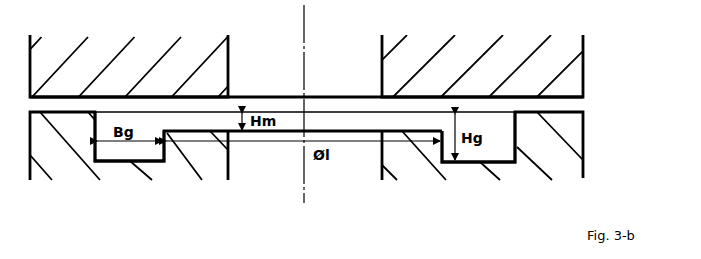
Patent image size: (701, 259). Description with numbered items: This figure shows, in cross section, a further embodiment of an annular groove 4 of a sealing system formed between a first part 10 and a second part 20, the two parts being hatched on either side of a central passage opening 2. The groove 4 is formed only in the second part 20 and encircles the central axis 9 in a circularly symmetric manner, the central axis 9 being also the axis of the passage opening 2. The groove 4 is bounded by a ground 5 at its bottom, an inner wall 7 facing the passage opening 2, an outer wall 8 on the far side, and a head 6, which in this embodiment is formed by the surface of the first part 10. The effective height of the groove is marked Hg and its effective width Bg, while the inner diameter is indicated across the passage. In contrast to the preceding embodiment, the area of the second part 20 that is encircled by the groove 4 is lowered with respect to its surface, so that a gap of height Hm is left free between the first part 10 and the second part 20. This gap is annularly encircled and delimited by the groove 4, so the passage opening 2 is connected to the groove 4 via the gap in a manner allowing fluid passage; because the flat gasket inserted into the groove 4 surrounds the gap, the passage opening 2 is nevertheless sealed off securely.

The passage opening 2 is at (341, 73).
The groove 4 is at (152, 128).
The ground 5 is at (470, 172).
The head 6 is at (474, 92).
The inner wall 7 is at (167, 152).
The outer wall 8 is at (95, 128).
The central axis 9 is at (305, 198).
The first part 10 is at (572, 78).
The second part 20 is at (575, 141).